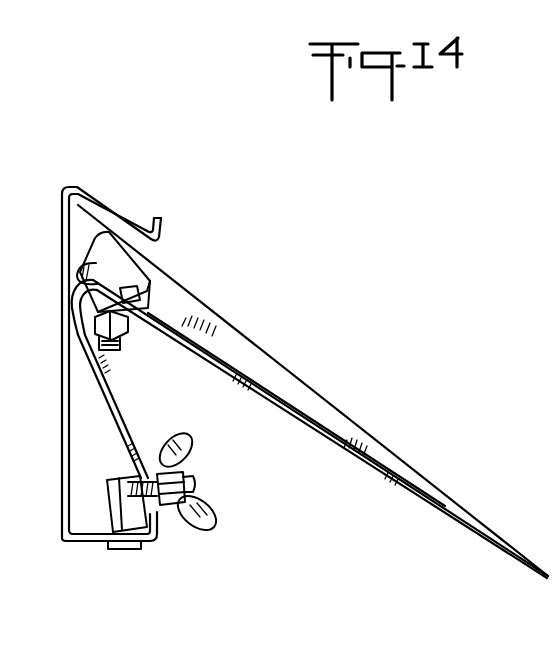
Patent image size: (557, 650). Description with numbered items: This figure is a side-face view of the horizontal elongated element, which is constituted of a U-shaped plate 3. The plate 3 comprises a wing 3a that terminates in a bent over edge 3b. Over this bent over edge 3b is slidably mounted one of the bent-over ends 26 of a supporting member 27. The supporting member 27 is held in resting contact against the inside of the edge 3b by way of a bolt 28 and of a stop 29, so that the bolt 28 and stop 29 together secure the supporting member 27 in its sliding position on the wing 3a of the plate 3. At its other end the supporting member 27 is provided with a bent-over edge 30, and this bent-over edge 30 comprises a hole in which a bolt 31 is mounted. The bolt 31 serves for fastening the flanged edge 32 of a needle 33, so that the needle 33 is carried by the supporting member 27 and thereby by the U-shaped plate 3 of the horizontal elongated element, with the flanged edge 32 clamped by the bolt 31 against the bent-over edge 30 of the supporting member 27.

The U-shaped plate 3 is at (94, 393).
The wing 3a is at (88, 543).
The bent over edge 3b is at (142, 543).
The bent-over end 26 is at (122, 550).
The supporting member 27 is at (134, 433).
The bolt 28 is at (200, 488).
The stop 29 is at (125, 482).
The bent-over edge 30 is at (84, 271).
The bolt 31 is at (130, 295).
The flanged edge 32 is at (198, 352).
The needle 33 is at (283, 384).